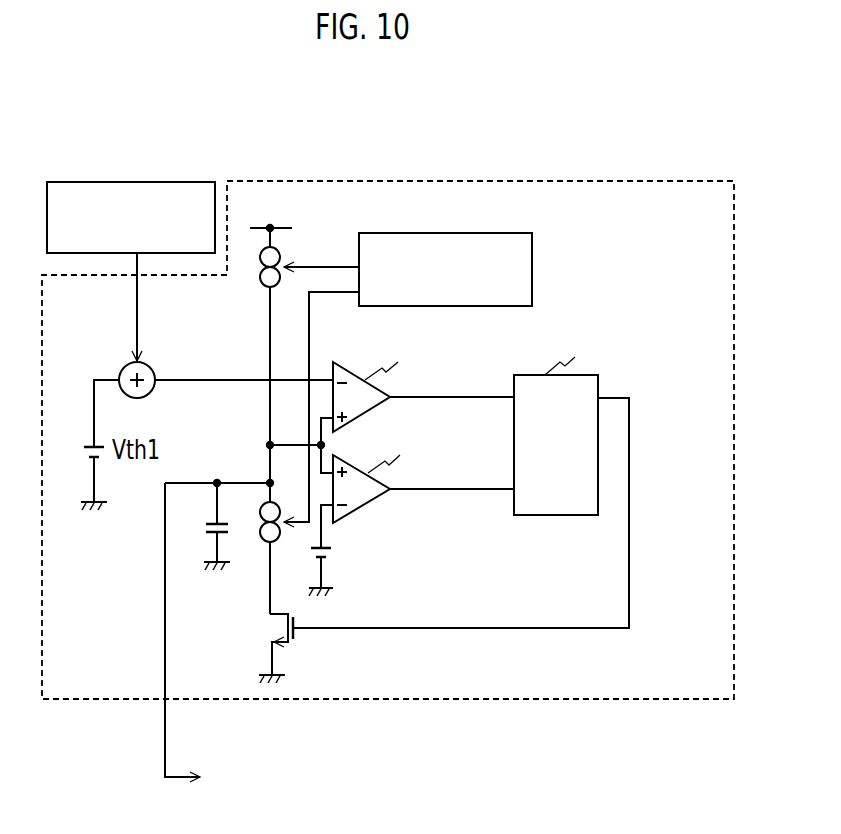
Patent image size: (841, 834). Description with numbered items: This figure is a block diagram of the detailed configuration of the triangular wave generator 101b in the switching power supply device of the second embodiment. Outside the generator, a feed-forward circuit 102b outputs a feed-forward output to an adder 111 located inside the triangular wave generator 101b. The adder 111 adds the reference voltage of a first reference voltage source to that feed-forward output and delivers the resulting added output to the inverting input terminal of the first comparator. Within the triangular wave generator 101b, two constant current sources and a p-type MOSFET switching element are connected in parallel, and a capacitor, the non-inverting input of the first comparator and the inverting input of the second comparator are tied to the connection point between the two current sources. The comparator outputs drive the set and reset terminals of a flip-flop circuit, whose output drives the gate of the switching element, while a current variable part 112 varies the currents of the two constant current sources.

The triangular wave generator 101b is at (388, 469).
The feed-forward circuit 102b is at (136, 200).
The adder 111 is at (162, 325).
The current variable part 112 is at (449, 254).